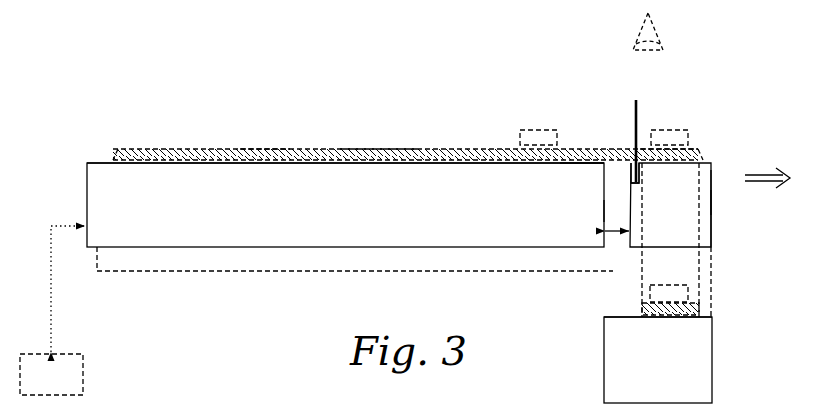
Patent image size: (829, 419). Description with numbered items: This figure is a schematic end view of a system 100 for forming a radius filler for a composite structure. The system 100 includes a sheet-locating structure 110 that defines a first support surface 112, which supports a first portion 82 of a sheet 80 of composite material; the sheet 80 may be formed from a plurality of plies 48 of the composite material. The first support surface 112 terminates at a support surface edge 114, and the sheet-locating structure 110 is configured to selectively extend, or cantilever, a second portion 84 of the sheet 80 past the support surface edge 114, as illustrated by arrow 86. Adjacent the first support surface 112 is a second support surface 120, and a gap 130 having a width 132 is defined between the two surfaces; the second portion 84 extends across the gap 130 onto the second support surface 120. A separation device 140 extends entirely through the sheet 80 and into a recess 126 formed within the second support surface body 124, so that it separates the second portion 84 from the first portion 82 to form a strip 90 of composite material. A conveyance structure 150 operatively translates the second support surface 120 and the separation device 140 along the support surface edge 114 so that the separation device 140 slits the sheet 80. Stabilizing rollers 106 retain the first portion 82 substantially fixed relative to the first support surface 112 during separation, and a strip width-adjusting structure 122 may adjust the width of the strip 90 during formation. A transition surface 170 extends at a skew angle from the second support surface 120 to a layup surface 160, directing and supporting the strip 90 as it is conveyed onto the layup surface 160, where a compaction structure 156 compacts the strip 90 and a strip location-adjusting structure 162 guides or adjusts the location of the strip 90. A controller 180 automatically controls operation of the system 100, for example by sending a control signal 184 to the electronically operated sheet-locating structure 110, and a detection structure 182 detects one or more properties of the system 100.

The system 100 is at (115, 85).
The sheet-locating structure 110 is at (86, 198).
The first support surface 112 is at (87, 163).
The sheet 80 is at (188, 147).
The first portion 82 is at (263, 148).
The plies 48 is at (410, 149).
The stabilizing rollers 106 is at (533, 130).
The second portion 84 is at (698, 150).
The second support surface 120 is at (711, 163).
The recess 126 is at (628, 172).
The separation device 140 is at (632, 117).
The strip width-adjusting structure 122 is at (708, 218).
The second support surface body 124 is at (715, 202).
The arrow 86 is at (775, 183).
The support surface edge 114 is at (593, 170).
The gap 130 is at (617, 211).
The width 132 is at (617, 233).
The transition surface 170 is at (705, 262).
The strip 90 is at (688, 287).
The compaction structure 156 is at (690, 300).
The layup surface 160 is at (615, 317).
The strip location-adjusting structure 162 is at (692, 370).
The conveyance structure 150 is at (378, 275).
The control signal 184 is at (55, 316).
The controller 180 is at (85, 370).
The detection structure 182 is at (655, 23).